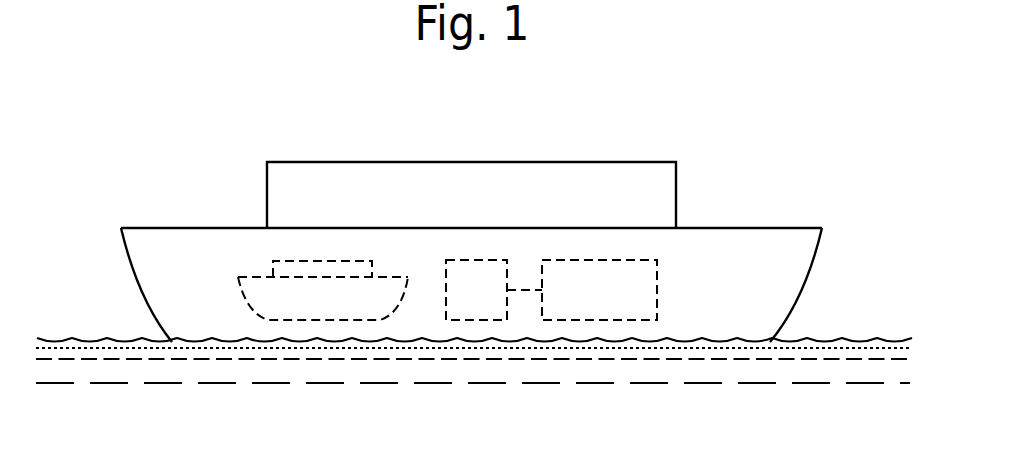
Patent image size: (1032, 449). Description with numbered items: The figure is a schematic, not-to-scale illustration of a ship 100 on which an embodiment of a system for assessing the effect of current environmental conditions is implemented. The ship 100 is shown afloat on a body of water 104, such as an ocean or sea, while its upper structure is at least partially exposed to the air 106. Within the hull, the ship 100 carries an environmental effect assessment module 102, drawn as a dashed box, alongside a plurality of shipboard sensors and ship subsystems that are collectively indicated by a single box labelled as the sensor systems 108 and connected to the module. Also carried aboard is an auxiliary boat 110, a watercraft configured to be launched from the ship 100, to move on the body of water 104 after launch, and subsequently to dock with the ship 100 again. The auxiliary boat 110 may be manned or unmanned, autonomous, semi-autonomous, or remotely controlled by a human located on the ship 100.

The ship 100 is at (732, 173).
The environmental effect assessment module 102 is at (595, 259).
The body of water 104 is at (86, 355).
The air 106 is at (147, 127).
The sensor systems 108 is at (476, 259).
The auxiliary boat 110 is at (322, 259).